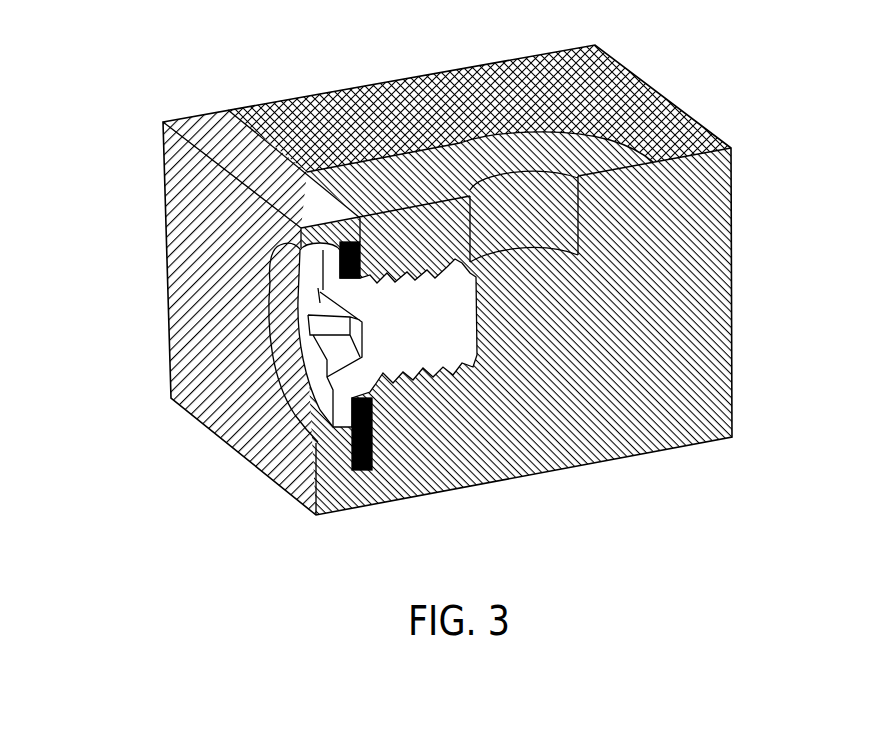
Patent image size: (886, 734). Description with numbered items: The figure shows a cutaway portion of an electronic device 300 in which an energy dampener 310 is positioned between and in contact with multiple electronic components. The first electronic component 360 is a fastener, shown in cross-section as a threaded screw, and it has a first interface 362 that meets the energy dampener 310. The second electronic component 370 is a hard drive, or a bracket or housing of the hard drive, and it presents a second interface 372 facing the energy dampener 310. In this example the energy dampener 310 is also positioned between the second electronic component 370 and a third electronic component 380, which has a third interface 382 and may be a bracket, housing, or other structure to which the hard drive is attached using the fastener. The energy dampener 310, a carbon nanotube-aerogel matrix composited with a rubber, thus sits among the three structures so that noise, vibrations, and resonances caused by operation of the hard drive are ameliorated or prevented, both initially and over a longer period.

The electronic device 300 is at (205, 38).
The energy dampener 310 is at (321, 366).
The first electronic component 360 is at (318, 417).
The first interface 362 is at (320, 446).
The second electronic component 370 is at (393, 289).
The second interface 372 is at (338, 264).
The third electronic component 380 is at (208, 358).
The third interface 382 is at (363, 476).